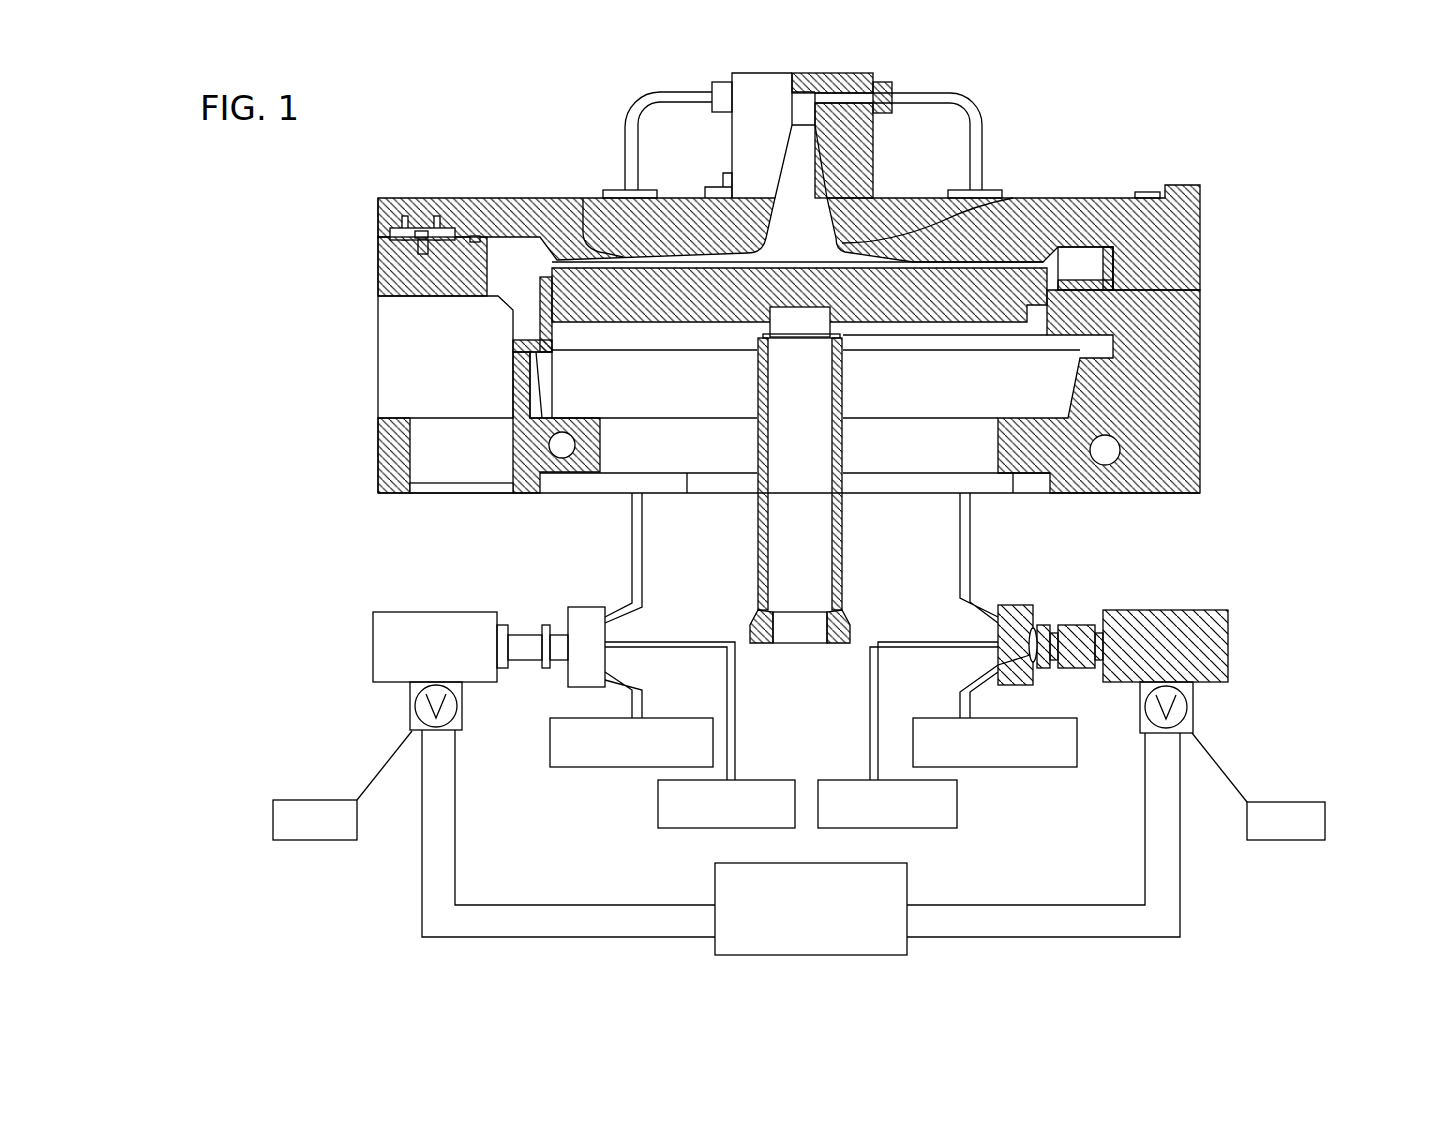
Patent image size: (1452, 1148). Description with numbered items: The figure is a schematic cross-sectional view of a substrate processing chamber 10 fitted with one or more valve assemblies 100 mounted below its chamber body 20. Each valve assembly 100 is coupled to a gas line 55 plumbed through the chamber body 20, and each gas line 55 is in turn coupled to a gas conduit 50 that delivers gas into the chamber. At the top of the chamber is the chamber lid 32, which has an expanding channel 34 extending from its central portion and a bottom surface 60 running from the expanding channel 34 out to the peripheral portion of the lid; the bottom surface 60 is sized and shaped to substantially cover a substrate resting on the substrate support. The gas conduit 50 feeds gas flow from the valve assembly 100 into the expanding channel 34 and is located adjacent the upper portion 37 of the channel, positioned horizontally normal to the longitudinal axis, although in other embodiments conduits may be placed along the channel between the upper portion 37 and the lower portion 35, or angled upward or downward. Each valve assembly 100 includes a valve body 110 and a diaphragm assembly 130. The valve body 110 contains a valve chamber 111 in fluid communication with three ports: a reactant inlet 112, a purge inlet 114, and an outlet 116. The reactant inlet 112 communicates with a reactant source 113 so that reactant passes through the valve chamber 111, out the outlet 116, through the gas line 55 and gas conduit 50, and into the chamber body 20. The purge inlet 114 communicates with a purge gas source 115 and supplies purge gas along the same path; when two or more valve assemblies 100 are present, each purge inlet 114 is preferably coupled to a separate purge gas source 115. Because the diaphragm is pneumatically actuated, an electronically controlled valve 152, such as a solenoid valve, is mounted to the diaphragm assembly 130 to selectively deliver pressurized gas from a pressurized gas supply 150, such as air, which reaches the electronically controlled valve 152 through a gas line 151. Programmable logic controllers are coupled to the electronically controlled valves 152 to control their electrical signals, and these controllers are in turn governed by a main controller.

The substrate processing chamber 10 is at (497, 118).
The chamber body 20 is at (1200, 462).
The chamber lid 32 is at (428, 214).
The expanding channel 34 is at (789, 243).
The lower portion 35 is at (1013, 198).
The upper portion 37 is at (790, 105).
The gas conduit 50 is at (837, 75).
The gas line 55 is at (632, 108).
The bottom surface 60 is at (583, 198).
The valve assembly 100 is at (318, 590).
The valve body 110 is at (1030, 603).
The valve chamber 111 is at (1038, 636).
The reactant inlet 112 is at (996, 638).
The reactant source 113 is at (762, 829).
The purge inlet 114 is at (1034, 664).
The purge gas source 115 is at (632, 767).
The outlet 116 is at (1008, 615).
The diaphragm assembly 130 is at (1256, 638).
The pressurized gas supply 150 is at (908, 894).
The gas line 151 is at (421, 905).
The electronically controlled valve 152 is at (1198, 710).